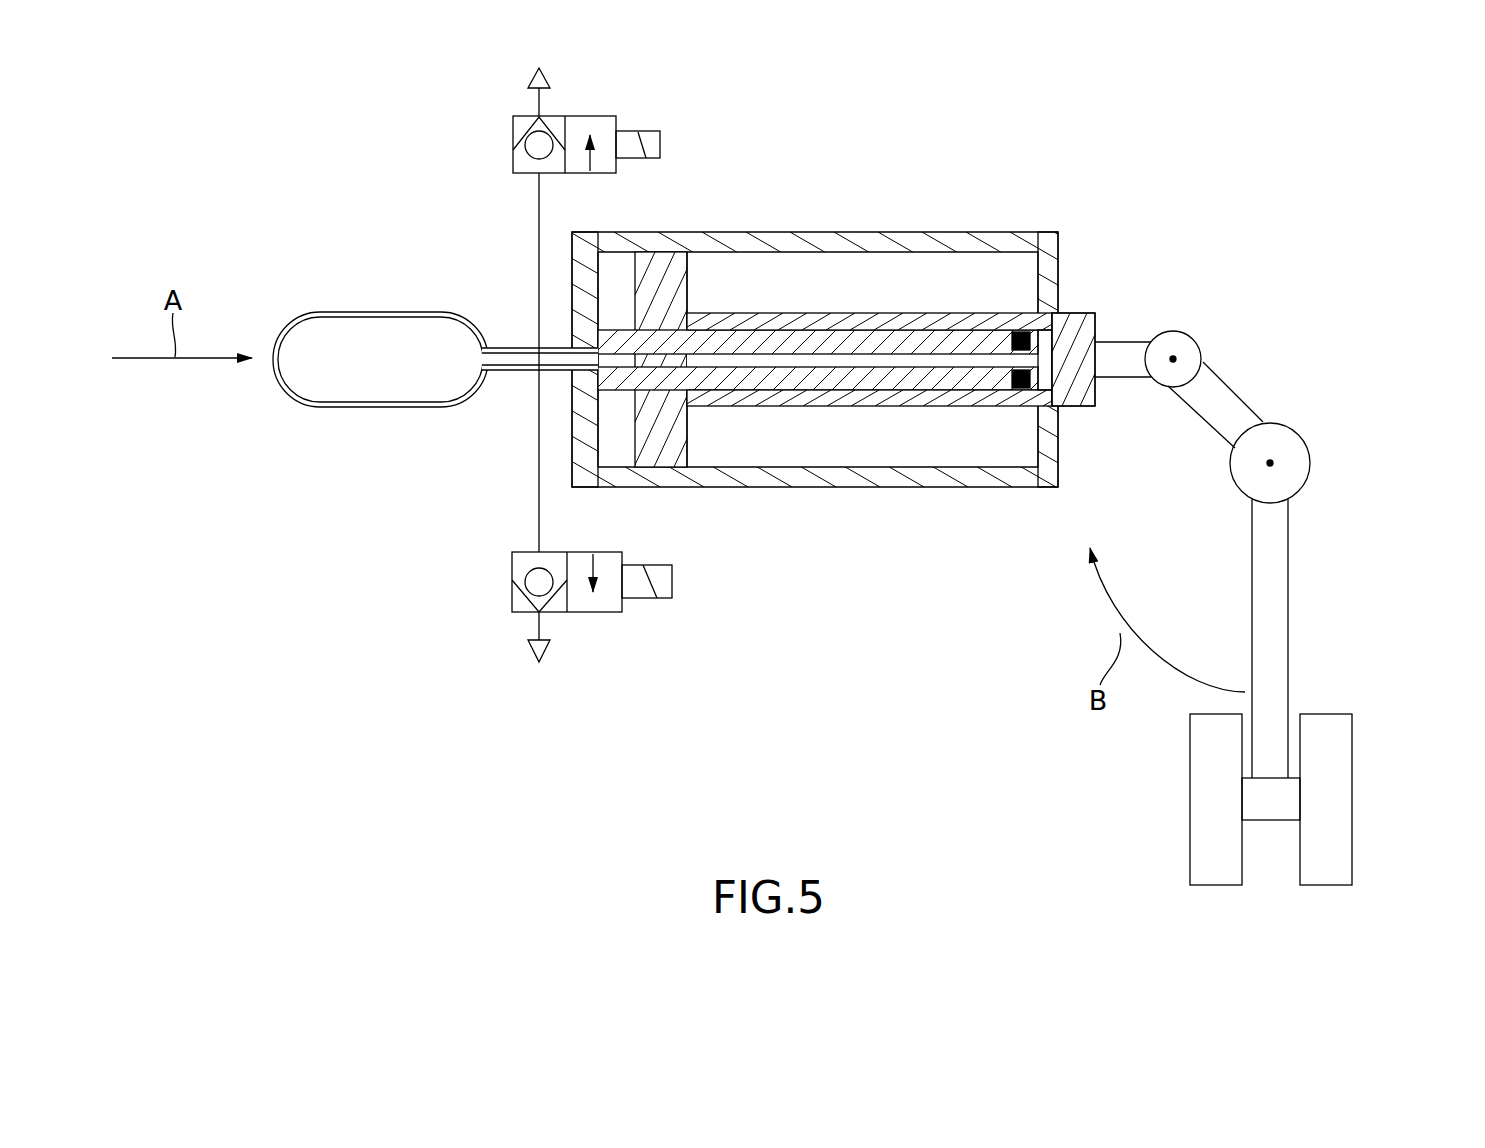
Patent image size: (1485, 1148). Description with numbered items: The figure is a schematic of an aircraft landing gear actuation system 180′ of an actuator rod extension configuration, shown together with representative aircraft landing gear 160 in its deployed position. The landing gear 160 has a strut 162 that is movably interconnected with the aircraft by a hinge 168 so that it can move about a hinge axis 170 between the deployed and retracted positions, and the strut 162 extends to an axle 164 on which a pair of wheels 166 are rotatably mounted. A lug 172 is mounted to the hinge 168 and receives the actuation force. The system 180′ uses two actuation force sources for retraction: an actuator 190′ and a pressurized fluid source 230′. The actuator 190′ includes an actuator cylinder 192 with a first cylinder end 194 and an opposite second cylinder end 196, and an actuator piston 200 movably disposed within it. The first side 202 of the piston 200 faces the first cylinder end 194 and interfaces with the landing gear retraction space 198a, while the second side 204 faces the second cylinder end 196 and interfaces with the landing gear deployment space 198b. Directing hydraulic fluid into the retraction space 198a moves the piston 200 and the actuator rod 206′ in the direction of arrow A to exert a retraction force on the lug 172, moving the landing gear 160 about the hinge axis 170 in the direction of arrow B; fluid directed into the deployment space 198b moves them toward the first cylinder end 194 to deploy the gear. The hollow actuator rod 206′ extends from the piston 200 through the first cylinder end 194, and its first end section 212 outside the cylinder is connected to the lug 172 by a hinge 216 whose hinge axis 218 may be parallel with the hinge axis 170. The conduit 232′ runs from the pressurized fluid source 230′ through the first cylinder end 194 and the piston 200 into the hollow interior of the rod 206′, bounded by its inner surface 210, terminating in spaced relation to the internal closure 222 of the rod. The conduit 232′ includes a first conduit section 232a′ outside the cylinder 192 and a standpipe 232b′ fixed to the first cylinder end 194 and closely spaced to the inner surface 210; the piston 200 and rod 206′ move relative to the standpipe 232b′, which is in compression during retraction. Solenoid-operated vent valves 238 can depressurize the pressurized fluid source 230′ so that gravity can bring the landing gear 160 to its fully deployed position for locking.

The aircraft landing gear 160 is at (1382, 386).
The strut 162 is at (1286, 643).
The axle 164 is at (1259, 820).
The wheels 166 is at (1190, 772).
The hinge 168 is at (1300, 432).
The hinge axis 170 is at (1285, 472).
The lug 172 is at (1228, 385).
The aircraft landing gear actuation system 180′ is at (1125, 145).
The actuator 190′ is at (886, 164).
The actuator cylinder 192 is at (820, 483).
The first cylinder end 194 is at (574, 258).
The second cylinder end 196 is at (1060, 266).
The landing gear retraction space 198a is at (618, 263).
The landing gear deployment space 198b is at (945, 445).
The actuator piston 200 is at (710, 291).
The first side 202 is at (641, 407).
The second side 204 is at (688, 433).
The actuator rod 206′ is at (752, 408).
The inner surface 210 is at (895, 380).
The first end section 212 is at (1119, 330).
The hinge 216 is at (1192, 340).
The hinge axis 218 is at (1168, 370).
The internal closure 222 is at (1065, 372).
The pressurized fluid source 230′ is at (347, 311).
The conduit 232′ is at (513, 393).
The first conduit section 232a′ is at (515, 347).
The standpipe 232b′ is at (822, 343).
The vent valves 238 is at (628, 96).